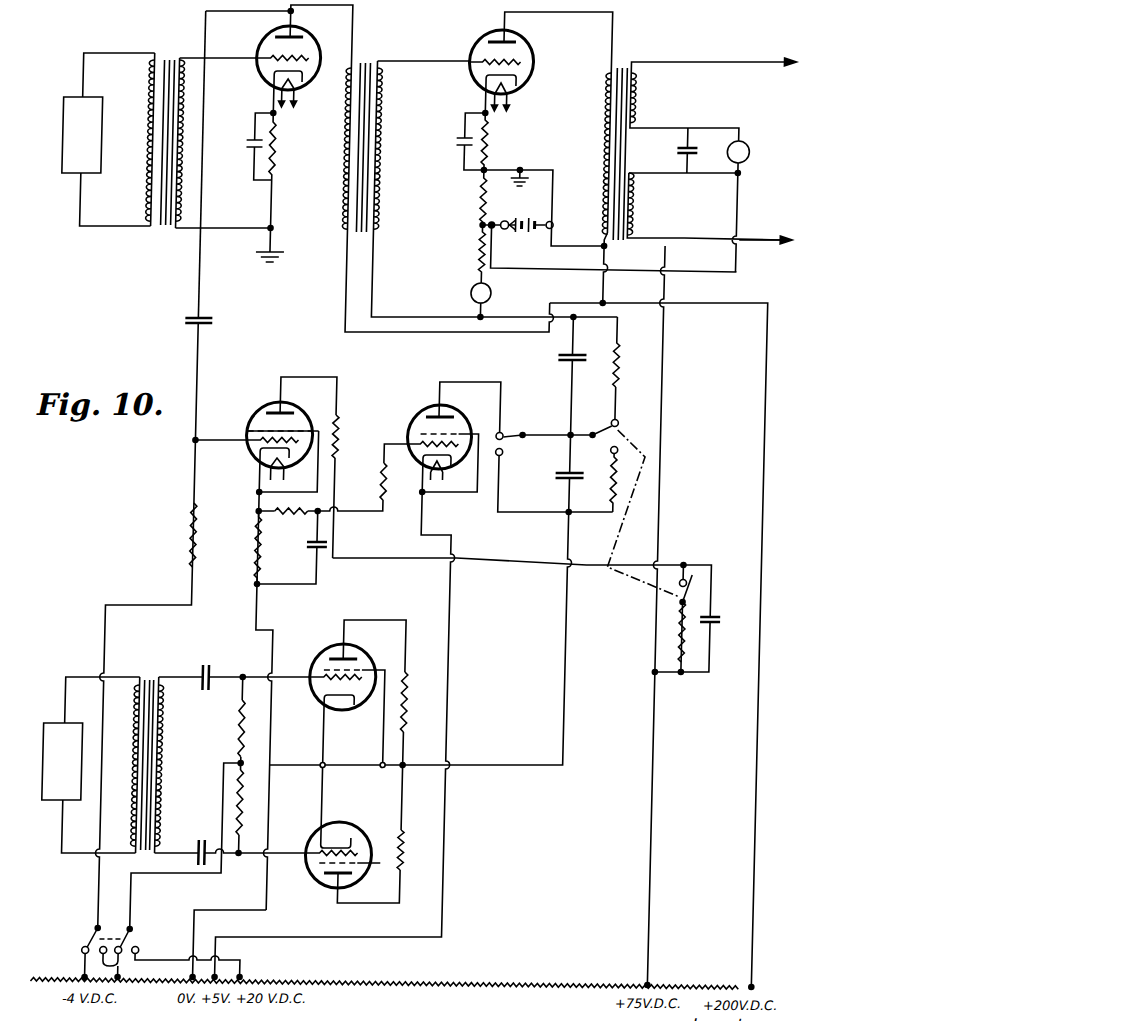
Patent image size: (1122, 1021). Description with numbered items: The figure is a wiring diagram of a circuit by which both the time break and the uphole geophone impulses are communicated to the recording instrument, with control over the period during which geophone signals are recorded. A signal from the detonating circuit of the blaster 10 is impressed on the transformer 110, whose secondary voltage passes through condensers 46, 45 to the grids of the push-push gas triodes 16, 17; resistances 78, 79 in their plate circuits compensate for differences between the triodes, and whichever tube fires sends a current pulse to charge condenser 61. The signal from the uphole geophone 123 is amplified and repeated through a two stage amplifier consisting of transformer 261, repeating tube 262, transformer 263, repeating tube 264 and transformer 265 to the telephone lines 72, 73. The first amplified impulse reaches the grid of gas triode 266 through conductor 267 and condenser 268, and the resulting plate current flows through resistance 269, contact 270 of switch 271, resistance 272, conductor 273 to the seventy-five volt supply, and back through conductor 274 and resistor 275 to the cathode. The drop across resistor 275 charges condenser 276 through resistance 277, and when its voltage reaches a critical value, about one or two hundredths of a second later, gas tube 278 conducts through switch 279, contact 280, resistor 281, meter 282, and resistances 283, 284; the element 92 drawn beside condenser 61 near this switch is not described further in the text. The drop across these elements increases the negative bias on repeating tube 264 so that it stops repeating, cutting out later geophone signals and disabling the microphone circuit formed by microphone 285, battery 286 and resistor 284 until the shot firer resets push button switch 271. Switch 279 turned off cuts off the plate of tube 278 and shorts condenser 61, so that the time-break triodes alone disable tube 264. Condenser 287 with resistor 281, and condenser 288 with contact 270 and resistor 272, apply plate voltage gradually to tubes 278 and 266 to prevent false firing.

The uphole geophone 123 is at (78, 173).
The transformer 261 is at (173, 229).
The repeating tube 262 is at (259, 35).
The transformer 263 is at (367, 66).
The repeating tube 264 is at (537, 47).
The transformer 265 is at (628, 71).
The gas triode 266 is at (262, 408).
The conductor 267 is at (218, 210).
The condenser 268 is at (219, 321).
The resistance 269 is at (350, 445).
The contact 270 is at (692, 598).
The switch 271 is at (628, 551).
The resistance 272 is at (690, 641).
The conductor 273 is at (673, 800).
The conductor 274 is at (269, 910).
The resistor 275 is at (270, 554).
The condenser 276 is at (325, 557).
The resistance 277 is at (319, 518).
The gas tube 278 is at (418, 413).
The switch 279 is at (534, 434).
The contact 280 is at (630, 428).
The resistor 281 is at (627, 372).
The meter 282 is at (477, 292).
The resistance 283 is at (484, 243).
The resistance 284 is at (484, 190).
The microphone 285 is at (510, 221).
The battery 286 is at (545, 233).
The condenser 287 is at (567, 368).
The condenser 288 is at (732, 623).
The telephone line 73 is at (757, 62).
The telephone line 72 is at (748, 241).
The condenser 61 is at (562, 481).
The resistor 92 is at (621, 471).
The blaster 10 is at (66, 727).
The transformer 110 is at (167, 676).
The condenser 46 is at (221, 691).
The condenser 45 is at (216, 840).
The gas triode 16 is at (333, 700).
The gas triode 17 is at (335, 881).
The resistance 78 is at (423, 720).
The resistance 79 is at (425, 843).